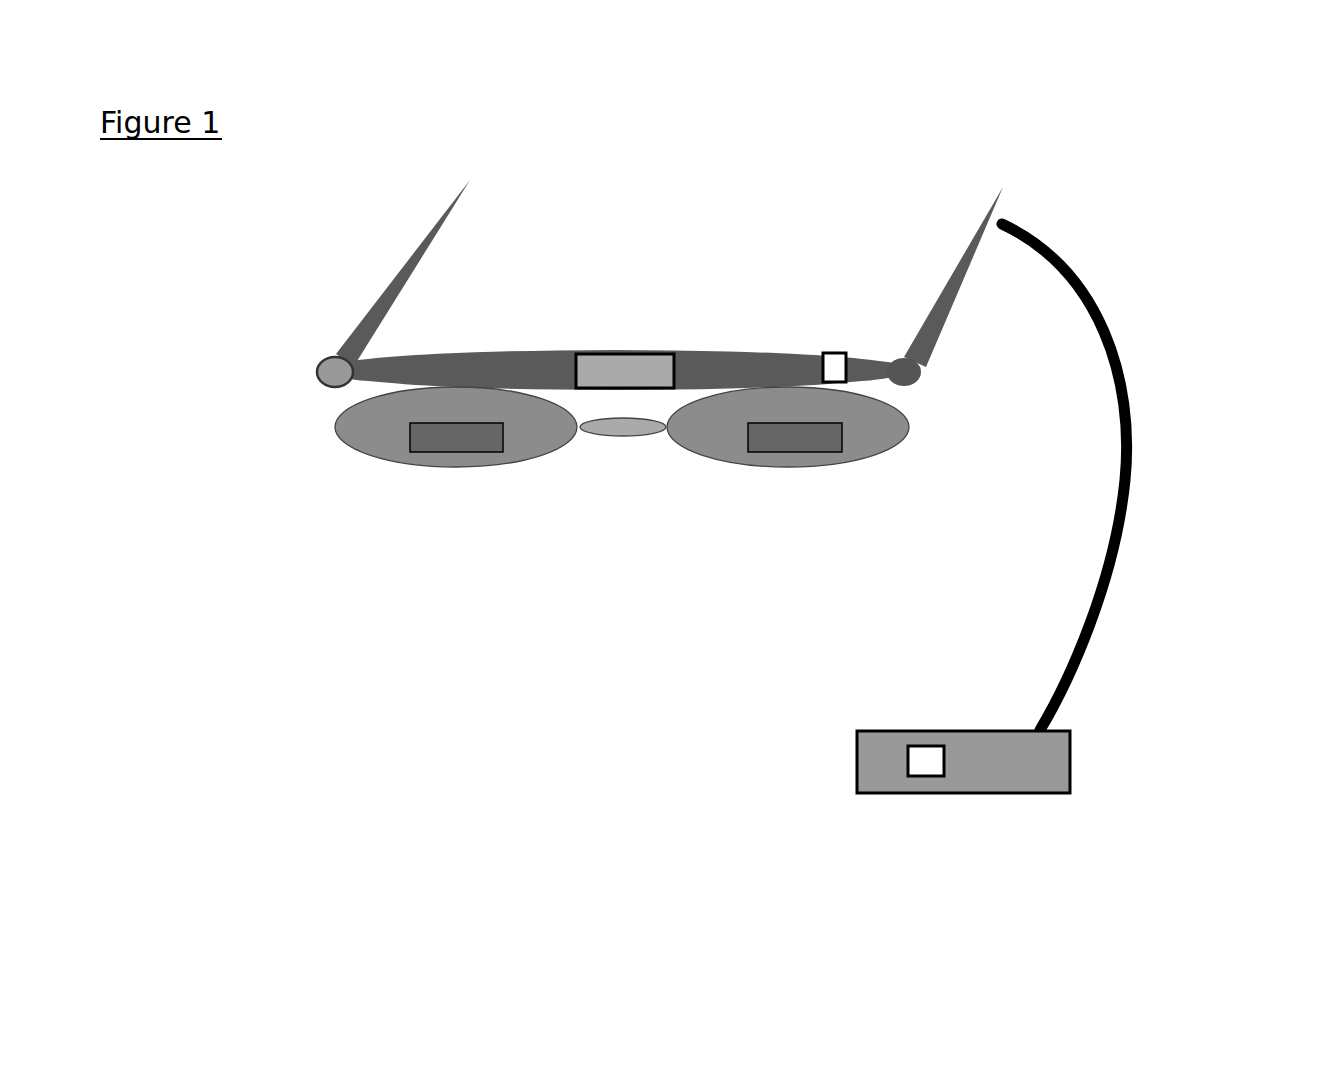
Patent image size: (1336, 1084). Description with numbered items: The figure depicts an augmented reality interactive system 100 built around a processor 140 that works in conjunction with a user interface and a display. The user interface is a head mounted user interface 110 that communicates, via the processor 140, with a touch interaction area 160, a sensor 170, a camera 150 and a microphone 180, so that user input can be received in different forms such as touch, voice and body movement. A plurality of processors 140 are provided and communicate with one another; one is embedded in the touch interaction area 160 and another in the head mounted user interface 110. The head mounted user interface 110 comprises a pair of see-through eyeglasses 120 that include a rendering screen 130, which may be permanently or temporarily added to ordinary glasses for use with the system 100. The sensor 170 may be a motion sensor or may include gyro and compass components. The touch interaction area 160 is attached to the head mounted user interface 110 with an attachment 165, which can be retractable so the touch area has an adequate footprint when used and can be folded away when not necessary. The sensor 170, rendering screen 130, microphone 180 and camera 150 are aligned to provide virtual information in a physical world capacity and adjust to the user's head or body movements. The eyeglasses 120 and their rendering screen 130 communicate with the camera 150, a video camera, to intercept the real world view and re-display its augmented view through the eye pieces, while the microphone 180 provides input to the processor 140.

The augmented reality interactive system 100 is at (555, 864).
The head mounted user interface 110 is at (330, 322).
The eyeglasses 120 is at (565, 428).
The rendering screen 130 is at (749, 456).
The processor 140 is at (925, 727).
The camera 150 is at (302, 376).
The touch interaction area 160 is at (888, 763).
The attachment 165 is at (1141, 484).
The sensor 170 is at (645, 347).
The microphone 180 is at (925, 373).